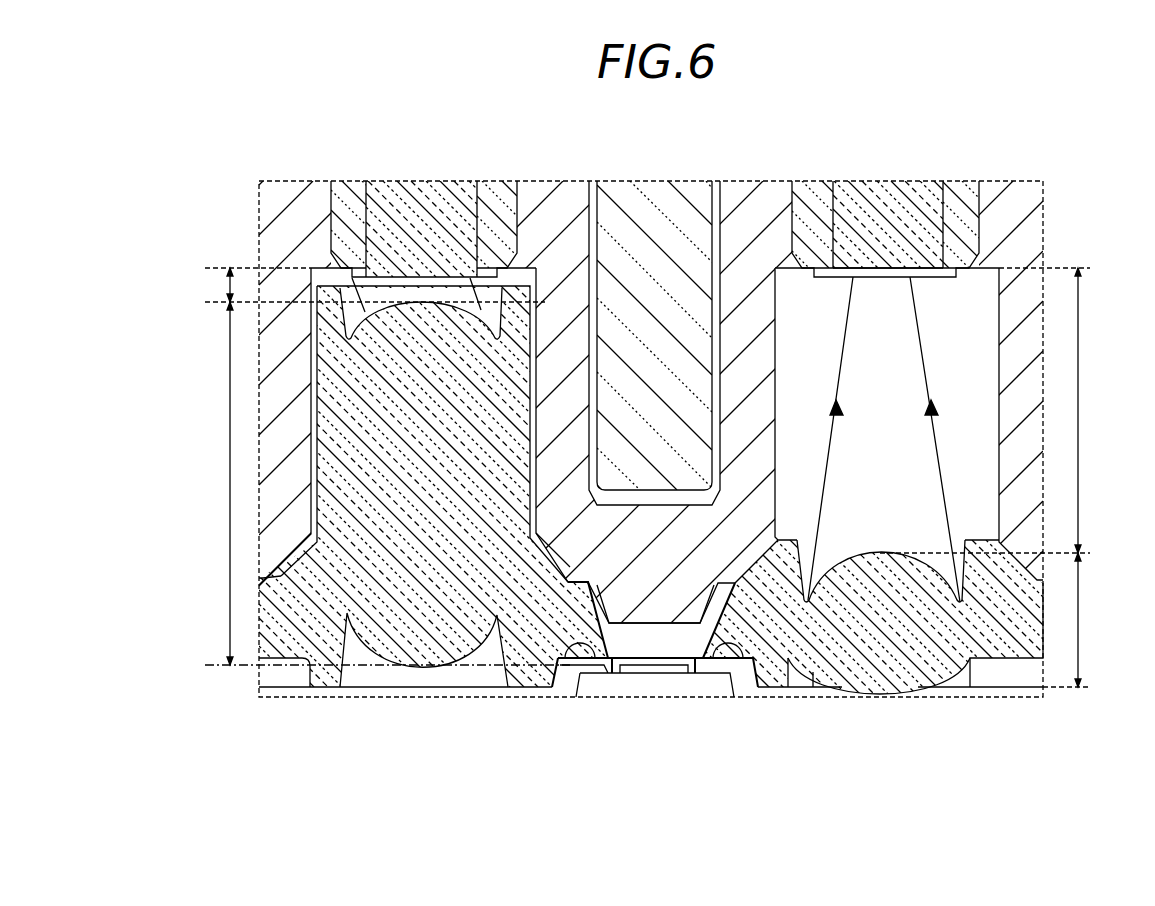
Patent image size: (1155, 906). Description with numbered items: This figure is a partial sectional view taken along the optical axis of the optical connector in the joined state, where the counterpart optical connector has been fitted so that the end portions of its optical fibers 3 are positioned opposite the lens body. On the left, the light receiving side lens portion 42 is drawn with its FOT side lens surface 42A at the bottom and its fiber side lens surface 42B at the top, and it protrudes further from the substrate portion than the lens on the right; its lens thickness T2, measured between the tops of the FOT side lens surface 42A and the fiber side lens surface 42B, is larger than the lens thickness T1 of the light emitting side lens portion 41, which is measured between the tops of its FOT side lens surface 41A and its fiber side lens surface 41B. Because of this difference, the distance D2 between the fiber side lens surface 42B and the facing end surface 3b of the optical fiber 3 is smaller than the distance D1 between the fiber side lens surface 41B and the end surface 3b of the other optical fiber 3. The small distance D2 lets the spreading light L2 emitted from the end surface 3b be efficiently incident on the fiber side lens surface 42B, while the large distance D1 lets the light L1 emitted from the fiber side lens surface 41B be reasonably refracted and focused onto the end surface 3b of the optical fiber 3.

The optical fiber 3 is at (417, 197).
The end surface of optical fiber 3b is at (452, 290).
The light emitting side lens portion 41 is at (957, 640).
The FOT side lens surface 41A is at (880, 694).
The fiber side lens surface 41B is at (921, 566).
The light receiving side lens portion 42 is at (310, 520).
The FOT side lens surface 42A is at (421, 668).
The fiber side lens surface 42B is at (364, 318).
The light L1 is at (918, 332).
The light L2 is at (482, 316).
The distance D1 is at (995, 410).
The distance D2 is at (371, 285).
The lens thickness T1 is at (1075, 620).
The lens thickness T2 is at (384, 483).